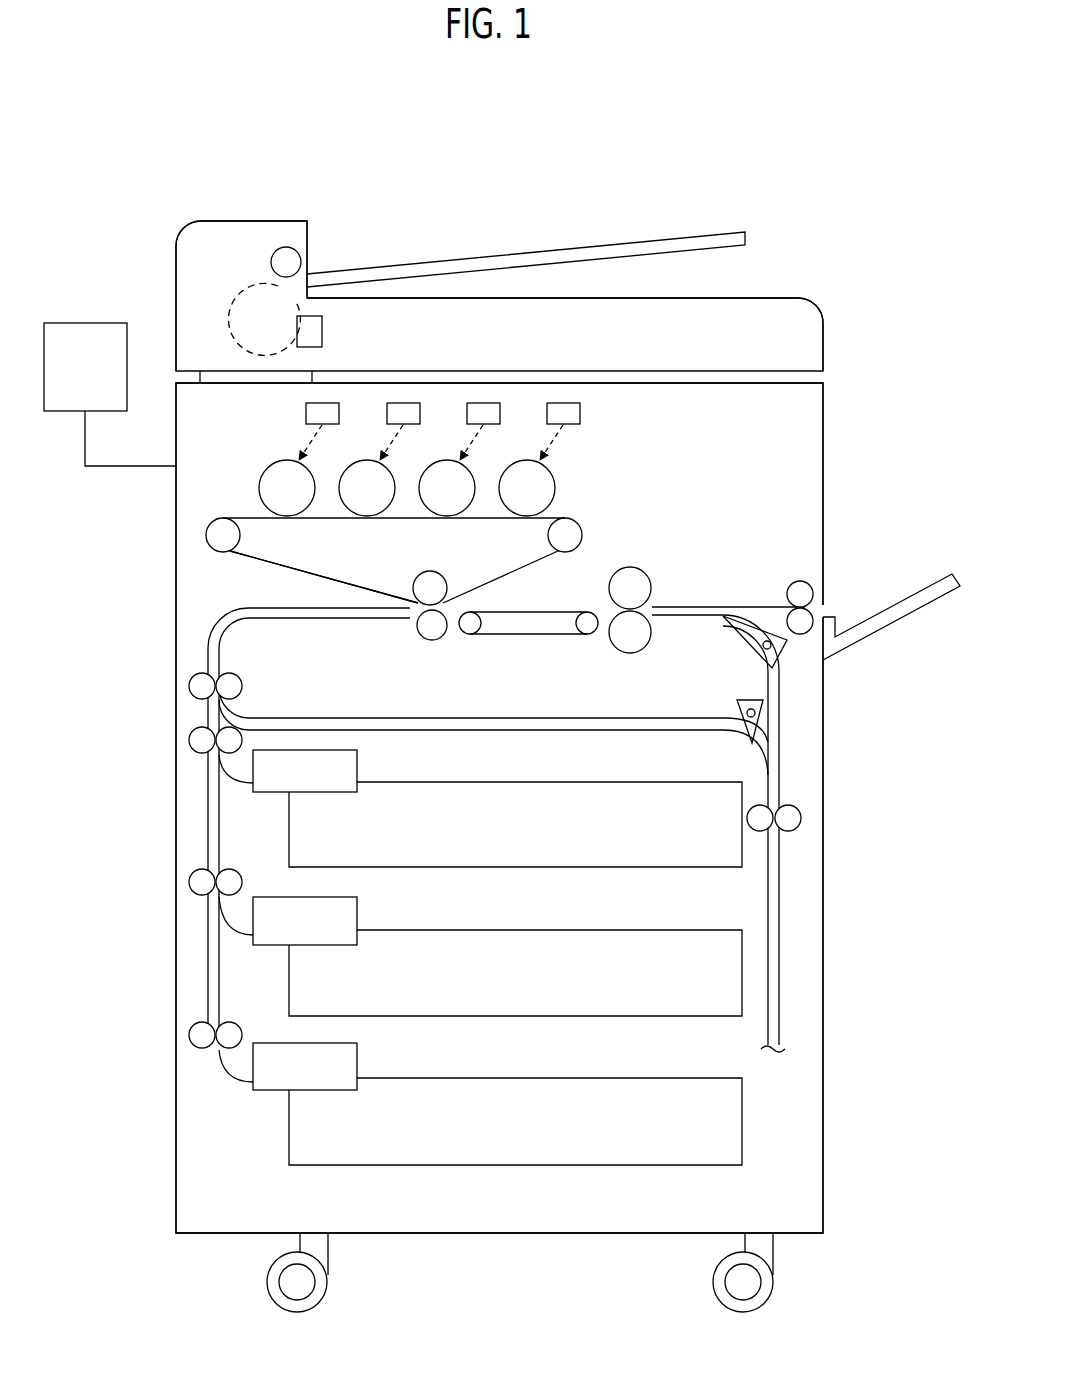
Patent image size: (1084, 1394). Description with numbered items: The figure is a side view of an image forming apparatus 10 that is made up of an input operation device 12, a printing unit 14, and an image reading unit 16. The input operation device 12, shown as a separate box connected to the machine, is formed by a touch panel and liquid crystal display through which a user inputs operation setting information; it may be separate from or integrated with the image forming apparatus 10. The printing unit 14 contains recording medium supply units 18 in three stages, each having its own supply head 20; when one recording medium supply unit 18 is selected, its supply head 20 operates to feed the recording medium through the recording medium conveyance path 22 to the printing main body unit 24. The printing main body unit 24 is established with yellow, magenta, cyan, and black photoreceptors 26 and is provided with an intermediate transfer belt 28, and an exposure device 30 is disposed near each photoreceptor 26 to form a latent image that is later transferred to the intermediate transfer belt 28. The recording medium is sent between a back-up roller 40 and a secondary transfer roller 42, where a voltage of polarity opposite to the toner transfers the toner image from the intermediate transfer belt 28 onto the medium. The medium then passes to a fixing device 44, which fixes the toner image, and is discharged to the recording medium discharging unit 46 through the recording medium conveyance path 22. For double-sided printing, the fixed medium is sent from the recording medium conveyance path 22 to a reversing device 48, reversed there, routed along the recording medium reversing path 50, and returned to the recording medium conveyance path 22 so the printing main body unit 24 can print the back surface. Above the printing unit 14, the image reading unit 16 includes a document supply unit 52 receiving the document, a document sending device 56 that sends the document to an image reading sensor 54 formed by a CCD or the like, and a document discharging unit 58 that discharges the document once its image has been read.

The image forming apparatus 10 is at (688, 166).
The input operation device 12 is at (80, 322).
The printing unit 14 is at (176, 574).
The image reading unit 16 is at (826, 332).
The recording medium supply unit 18 is at (640, 869).
The supply head 20 is at (270, 793).
The recording medium conveyance path 22 is at (232, 625).
The printing main body unit 24 is at (214, 508).
The photoreceptor 26 is at (555, 487).
The intermediate transfer belt 28 is at (266, 570).
The exposure device 30 is at (581, 414).
The back-up roller 40 is at (434, 580).
The secondary transfer roller 42 is at (431, 641).
The fixing device 44 is at (652, 578).
The recording medium discharging unit 46 is at (912, 590).
The reversing device 48 is at (775, 897).
The recording medium reversing path 50 is at (583, 718).
The document supply unit 52 is at (440, 261).
The image reading sensor 54 is at (322, 334).
The document sending device 56 is at (246, 220).
The document discharging unit 58 is at (756, 298).